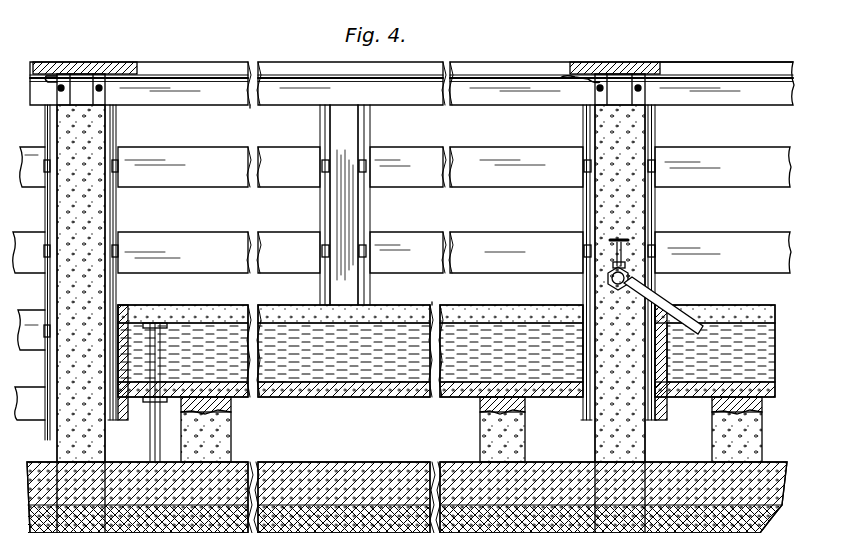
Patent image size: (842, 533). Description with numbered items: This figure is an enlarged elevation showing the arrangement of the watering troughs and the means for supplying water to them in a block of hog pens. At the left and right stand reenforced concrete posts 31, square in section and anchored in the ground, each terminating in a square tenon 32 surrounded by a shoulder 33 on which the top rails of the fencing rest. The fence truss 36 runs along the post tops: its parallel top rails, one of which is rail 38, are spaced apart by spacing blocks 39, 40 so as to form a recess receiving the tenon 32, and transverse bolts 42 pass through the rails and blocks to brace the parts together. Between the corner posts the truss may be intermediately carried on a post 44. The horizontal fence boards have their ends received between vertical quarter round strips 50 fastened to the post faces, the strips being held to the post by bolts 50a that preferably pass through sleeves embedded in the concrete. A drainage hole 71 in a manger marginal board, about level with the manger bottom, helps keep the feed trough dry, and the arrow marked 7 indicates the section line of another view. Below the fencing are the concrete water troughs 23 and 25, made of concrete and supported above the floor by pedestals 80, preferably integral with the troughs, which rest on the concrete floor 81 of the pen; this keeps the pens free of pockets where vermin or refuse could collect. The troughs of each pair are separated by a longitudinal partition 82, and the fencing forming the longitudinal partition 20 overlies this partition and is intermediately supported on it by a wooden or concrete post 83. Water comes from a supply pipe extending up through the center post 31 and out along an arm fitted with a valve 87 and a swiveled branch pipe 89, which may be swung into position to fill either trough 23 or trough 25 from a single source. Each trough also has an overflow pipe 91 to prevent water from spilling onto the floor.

The longitudinal partition 20 is at (780, 62).
The water trough 23 is at (290, 318).
The water trough 25 is at (769, 311).
The reenforced concrete post 31 is at (639, 210).
The square tenon 32 is at (88, 84).
The shoulder 33 is at (80, 107).
The fence member or truss 36 is at (255, 70).
The top rail 38 is at (250, 121).
The spacing block 39 is at (48, 76).
The spacing block 40 is at (110, 79).
The transverse bolt 42 is at (63, 86).
The intermediate post 44 is at (100, 212).
The quarter round strip 50 is at (320, 128).
The bolt 50a is at (370, 165).
The drainage hole 71 is at (168, 250).
The section line 7 is at (175, 238).
The pedestal 80 is at (232, 432).
The concrete floor 81 is at (315, 462).
The longitudinal partition 82 is at (432, 293).
The post 83 is at (348, 236).
The valve 87 is at (607, 279).
The swiveled branch pipe 89 is at (647, 291).
The overflow pipe 91 is at (150, 440).